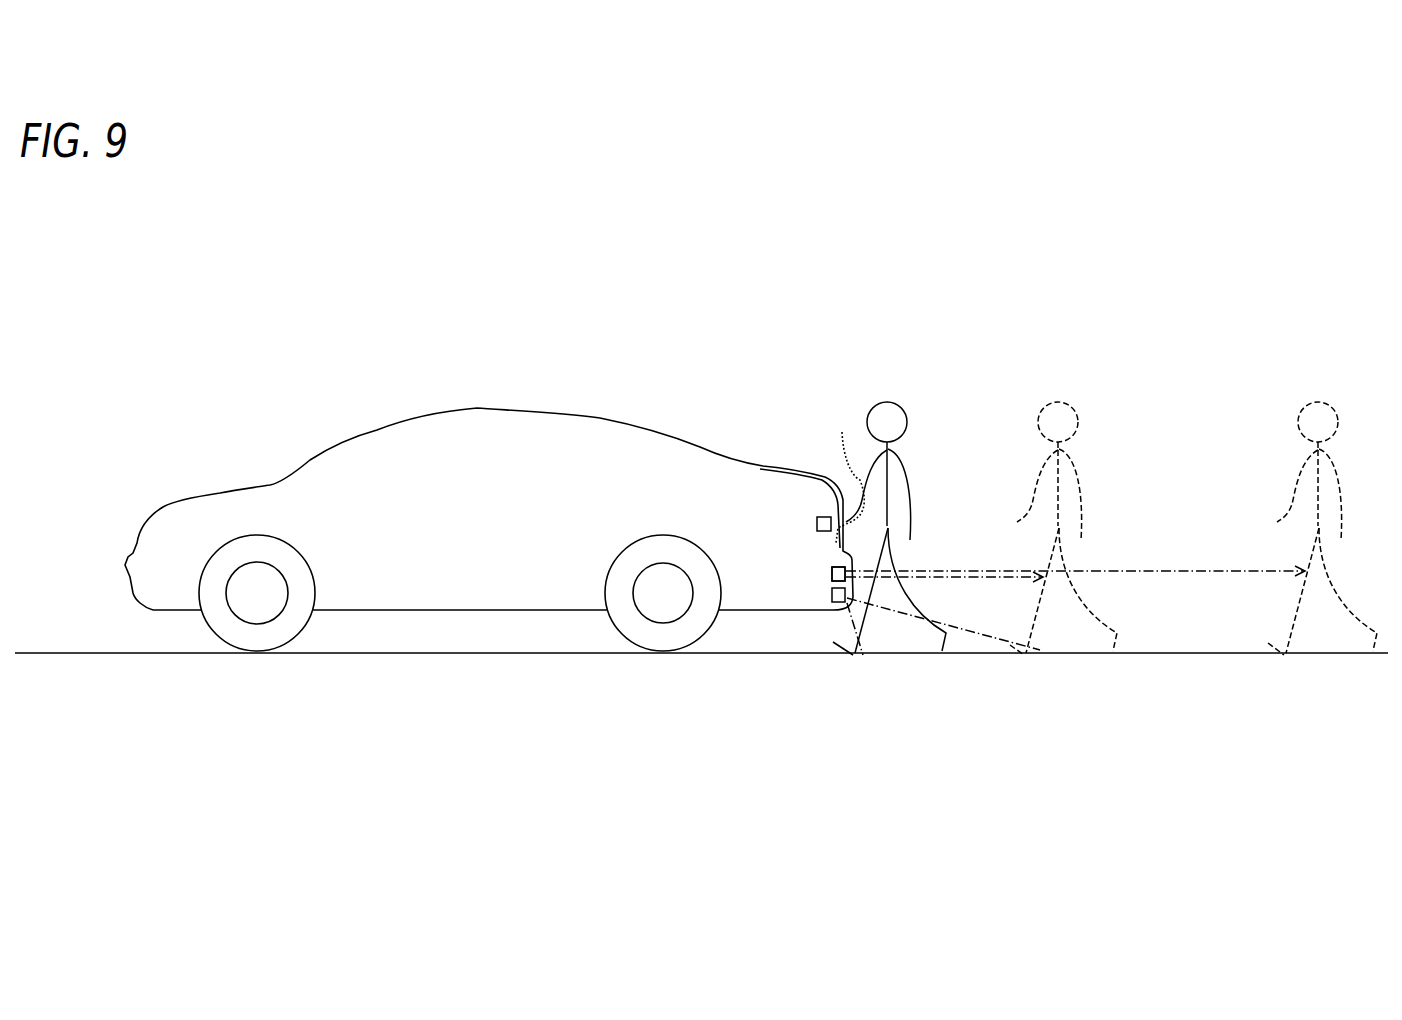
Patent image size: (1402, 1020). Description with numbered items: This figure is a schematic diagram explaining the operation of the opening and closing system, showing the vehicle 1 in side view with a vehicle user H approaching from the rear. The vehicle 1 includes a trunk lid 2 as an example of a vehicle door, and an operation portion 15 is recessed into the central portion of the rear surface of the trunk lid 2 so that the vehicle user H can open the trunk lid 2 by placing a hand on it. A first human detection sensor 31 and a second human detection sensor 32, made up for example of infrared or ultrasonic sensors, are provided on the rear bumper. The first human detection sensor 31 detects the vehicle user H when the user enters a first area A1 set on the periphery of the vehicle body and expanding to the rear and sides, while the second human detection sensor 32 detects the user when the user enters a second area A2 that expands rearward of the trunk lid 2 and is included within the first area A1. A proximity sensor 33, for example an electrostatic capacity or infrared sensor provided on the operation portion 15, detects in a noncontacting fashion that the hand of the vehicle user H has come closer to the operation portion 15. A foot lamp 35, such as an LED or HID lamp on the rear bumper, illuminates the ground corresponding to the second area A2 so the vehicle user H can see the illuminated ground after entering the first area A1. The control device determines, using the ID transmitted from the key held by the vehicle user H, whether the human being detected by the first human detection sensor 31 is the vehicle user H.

The vehicle 1 is at (335, 452).
The trunk lid 2 is at (781, 458).
The operation portion 15 is at (847, 475).
The first human detection sensor 31 is at (832, 575).
The second human detection sensor 32 is at (799, 663).
The proximity sensor 33 is at (817, 525).
The foot lamp 35 is at (838, 602).
The vehicle user H is at (888, 401).
The first area A1 is at (1180, 572).
The second area A2 is at (963, 578).